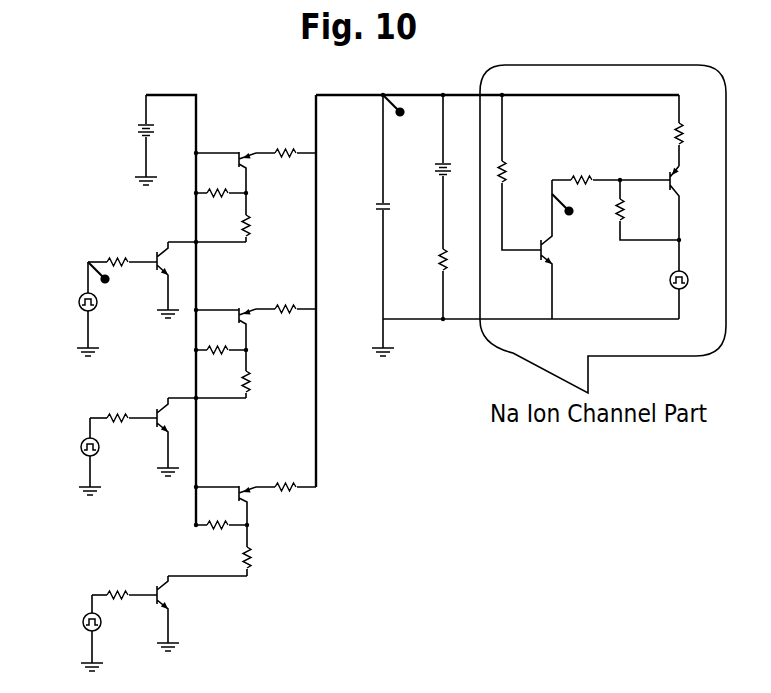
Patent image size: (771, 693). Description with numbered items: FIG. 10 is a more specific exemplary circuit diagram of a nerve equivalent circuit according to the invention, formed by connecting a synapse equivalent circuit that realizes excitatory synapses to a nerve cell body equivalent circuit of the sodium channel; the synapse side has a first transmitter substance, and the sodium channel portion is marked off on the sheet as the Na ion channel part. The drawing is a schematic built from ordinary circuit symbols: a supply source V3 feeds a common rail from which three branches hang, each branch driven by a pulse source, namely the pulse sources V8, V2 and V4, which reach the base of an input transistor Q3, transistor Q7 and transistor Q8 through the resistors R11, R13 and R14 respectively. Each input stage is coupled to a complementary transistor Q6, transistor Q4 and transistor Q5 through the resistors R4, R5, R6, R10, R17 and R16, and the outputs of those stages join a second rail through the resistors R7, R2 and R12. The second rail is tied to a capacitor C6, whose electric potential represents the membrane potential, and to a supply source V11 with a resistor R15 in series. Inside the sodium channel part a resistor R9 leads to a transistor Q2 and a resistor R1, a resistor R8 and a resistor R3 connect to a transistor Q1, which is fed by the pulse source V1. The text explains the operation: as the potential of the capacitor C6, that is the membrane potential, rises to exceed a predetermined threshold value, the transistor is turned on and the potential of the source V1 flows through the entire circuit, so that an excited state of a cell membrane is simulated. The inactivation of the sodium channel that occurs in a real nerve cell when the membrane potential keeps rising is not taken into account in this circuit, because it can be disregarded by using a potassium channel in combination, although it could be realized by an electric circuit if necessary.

The DC voltage source 5Vdc V3 is at (138, 142).
The pulse voltage source V8 is at (73, 313).
The pulse voltage source V2 is at (69, 460).
The pulse voltage source V4 is at (70, 637).
The DC voltage source 5Vdc V11 is at (460, 172).
The potential of V1 is at (660, 287).
The PNP transistor QPDEF Q1 is at (694, 203).
The NPN transistor QNDEF Q2 is at (563, 249).
The NPN transistor QNDEF Q3 is at (155, 276).
The PNP transistor QPDEF Q4 is at (242, 321).
The PNP transistor QPDEF Q5 is at (262, 499).
The PNP transistor QPDEF Q6 is at (242, 164).
The NPN transistor QNDEF Q7 is at (155, 433).
The NPN transistor QNDEF Q8 is at (169, 617).
The resistor 10k R1 is at (611, 183).
The resistor 100 R2 is at (291, 311).
The resistor 100 R3 is at (696, 130).
The resistor 10k R4 is at (219, 196).
The resistor 10k R5 is at (262, 217).
The resistor 10k R6 is at (219, 353).
The resistor 100 R7 is at (291, 156).
The resistor 10k R8 is at (647, 210).
The resistor 100 R9 is at (519, 172).
The resistor 10k R10 is at (262, 374).
The resistor 1k R11 is at (109, 267).
The resistor 100 R12 is at (291, 489).
The resistor 1k R13 is at (111, 424).
The resistor 1k R14 is at (112, 594).
The resistor 10k R15 is at (459, 284).
The resistor 10k R16 is at (264, 550).
The resistor 10k R17 is at (219, 528).
The capacitor 50u C6 is at (395, 234).